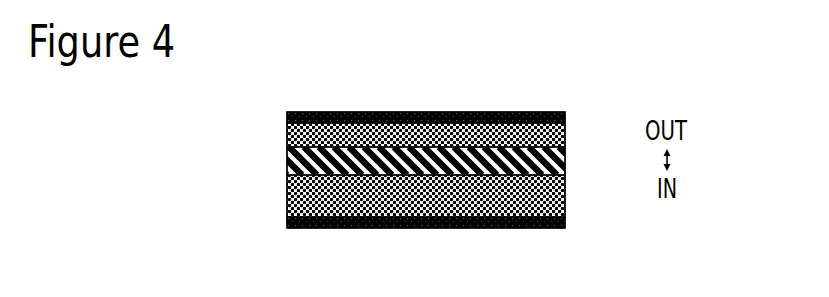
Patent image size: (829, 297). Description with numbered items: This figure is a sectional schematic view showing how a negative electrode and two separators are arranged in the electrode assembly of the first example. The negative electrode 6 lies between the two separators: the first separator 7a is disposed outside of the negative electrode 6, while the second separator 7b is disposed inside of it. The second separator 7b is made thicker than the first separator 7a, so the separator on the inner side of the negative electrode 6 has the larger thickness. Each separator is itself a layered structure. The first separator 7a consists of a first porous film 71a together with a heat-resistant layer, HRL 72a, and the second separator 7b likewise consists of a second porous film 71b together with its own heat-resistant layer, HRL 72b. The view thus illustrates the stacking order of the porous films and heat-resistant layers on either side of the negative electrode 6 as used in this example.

The negative electrode 6 is at (552, 162).
The first separator 7a is at (212, 93).
The first porous film 71a is at (295, 137).
The HRL 72a is at (287, 118).
The second separator 7b is at (212, 175).
The second porous film 71b is at (302, 192).
The HRL 72b is at (287, 220).